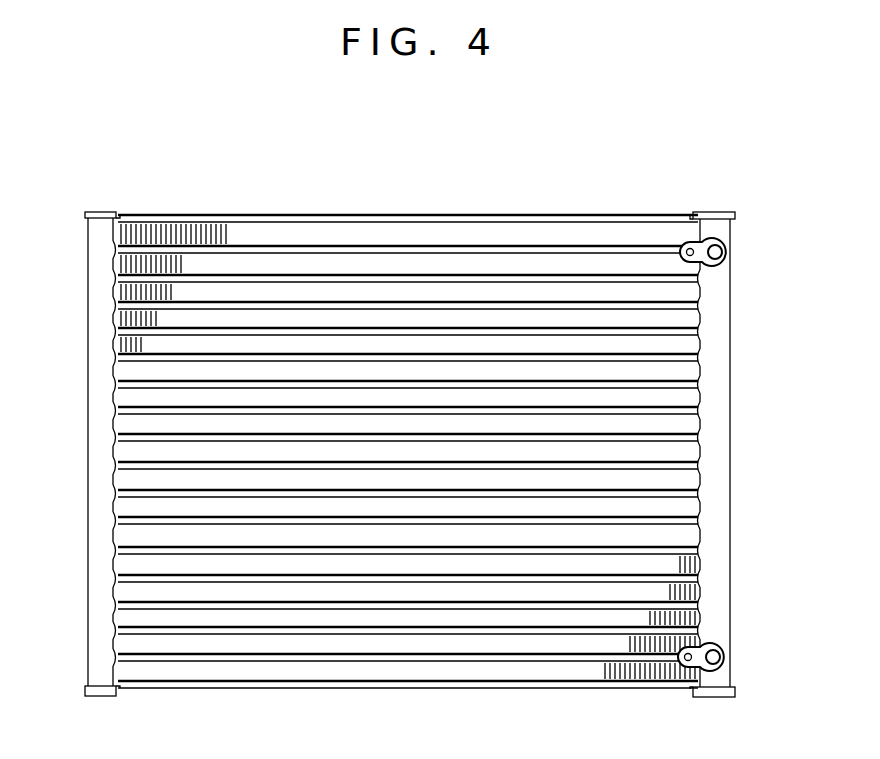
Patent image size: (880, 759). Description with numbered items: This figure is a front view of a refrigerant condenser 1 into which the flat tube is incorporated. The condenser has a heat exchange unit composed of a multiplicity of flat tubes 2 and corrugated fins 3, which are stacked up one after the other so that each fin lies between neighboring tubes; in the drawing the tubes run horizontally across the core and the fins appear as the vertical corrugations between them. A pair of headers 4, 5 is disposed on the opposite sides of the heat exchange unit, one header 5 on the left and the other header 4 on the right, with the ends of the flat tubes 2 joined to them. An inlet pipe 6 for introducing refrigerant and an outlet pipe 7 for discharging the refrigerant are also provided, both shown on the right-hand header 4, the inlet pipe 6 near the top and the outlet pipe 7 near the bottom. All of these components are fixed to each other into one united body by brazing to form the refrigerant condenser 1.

The refrigerant condenser 1 is at (457, 200).
The flat tubes 2 is at (307, 278).
The corrugated fins 3 is at (182, 288).
The header 4 is at (718, 363).
The header 5 is at (102, 385).
The inlet pipe 6 is at (732, 248).
The outlet pipe 7 is at (728, 657).